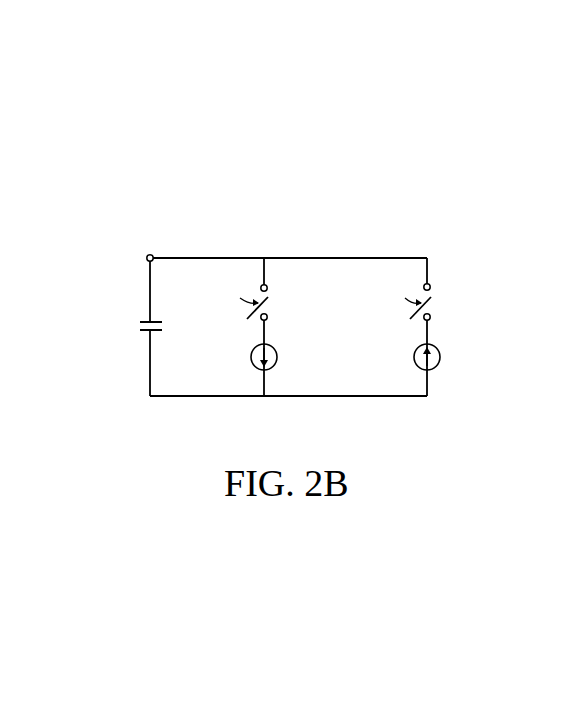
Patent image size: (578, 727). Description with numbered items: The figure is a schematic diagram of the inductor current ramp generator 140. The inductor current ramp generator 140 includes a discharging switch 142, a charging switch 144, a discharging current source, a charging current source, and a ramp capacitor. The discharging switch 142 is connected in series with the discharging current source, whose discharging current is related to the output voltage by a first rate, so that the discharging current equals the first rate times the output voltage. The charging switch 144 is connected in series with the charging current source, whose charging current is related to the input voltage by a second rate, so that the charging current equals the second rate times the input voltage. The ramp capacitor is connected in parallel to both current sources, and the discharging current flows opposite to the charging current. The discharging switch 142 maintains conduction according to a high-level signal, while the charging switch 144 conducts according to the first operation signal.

The inductor current ramp generator 140 is at (136, 182).
The discharging switch 142 is at (273, 302).
The charging switch 144 is at (436, 302).